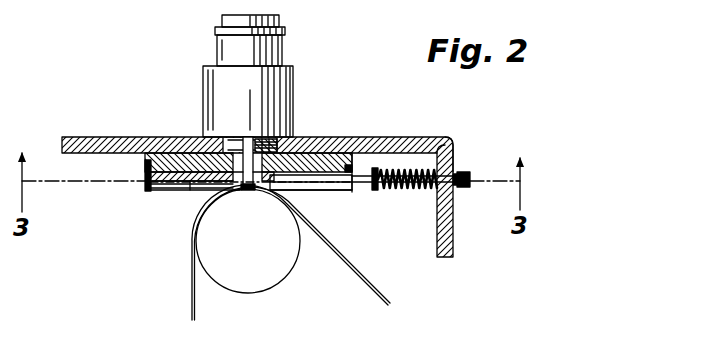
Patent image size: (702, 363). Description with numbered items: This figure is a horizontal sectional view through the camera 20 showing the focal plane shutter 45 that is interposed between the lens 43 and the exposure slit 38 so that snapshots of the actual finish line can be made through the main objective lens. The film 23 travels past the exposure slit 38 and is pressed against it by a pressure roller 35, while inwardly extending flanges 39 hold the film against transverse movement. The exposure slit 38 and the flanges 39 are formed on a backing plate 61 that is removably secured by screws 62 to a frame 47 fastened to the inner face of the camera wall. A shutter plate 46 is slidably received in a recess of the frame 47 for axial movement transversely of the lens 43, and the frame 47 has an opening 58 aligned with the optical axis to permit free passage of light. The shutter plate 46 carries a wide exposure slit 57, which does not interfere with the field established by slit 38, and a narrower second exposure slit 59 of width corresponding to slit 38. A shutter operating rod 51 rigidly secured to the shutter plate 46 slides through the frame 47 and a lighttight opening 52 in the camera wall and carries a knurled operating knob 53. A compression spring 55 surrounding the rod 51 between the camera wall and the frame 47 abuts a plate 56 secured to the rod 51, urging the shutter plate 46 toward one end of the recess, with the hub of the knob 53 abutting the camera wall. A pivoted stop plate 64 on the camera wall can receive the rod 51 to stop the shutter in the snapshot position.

The camera 20 is at (436, 135).
The film 23 is at (191, 272).
The pressure roller 35 is at (283, 271).
The third exposure slit 38 is at (241, 190).
The flanges 39 is at (162, 191).
The lens 43 is at (293, 72).
The focal plane shutter 45 is at (338, 198).
The shutter plate 46 is at (150, 182).
The frame 47 is at (145, 161).
The shutter operating rod 51 is at (312, 190).
The lighttight opening 52 is at (455, 172).
The knurled operating knob 53 is at (470, 183).
The compression spring 55 is at (405, 190).
The plate 56 is at (375, 191).
The exposure slit 57 is at (255, 190).
The opening 58 is at (300, 140).
The second exposure slit 59 is at (197, 191).
The backing plate 61 is at (150, 190).
The screws 62 is at (146, 178).
The stop plate 64 is at (458, 191).